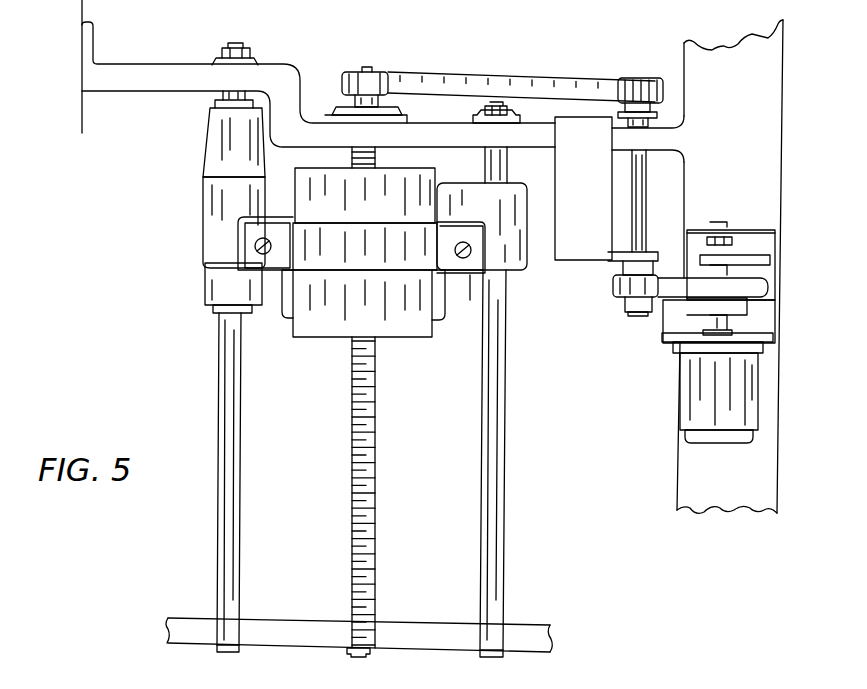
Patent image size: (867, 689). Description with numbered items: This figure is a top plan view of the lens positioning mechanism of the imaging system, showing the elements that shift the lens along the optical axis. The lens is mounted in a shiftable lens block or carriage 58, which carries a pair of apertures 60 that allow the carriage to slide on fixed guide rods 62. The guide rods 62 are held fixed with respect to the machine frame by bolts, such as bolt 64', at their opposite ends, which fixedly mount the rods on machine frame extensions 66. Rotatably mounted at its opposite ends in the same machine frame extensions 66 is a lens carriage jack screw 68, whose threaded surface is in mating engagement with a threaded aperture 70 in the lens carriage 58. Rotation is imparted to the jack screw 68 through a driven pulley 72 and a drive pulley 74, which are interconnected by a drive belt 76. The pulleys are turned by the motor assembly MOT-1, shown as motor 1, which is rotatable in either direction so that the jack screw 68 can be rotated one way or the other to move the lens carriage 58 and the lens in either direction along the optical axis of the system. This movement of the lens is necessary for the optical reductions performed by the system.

The lens carriage 58 is at (323, 330).
The apertures 60 is at (507, 270).
The guide rods 62 is at (230, 405).
The bolt 64' is at (265, 51).
The machine frame extensions 66 is at (158, 75).
The lens carriage jack screw 68 is at (365, 452).
The threaded aperture 70 is at (375, 340).
The driven pulley 72 is at (388, 73).
The drive pulley 74 is at (630, 77).
The drive belt 76 is at (458, 87).
The motor assembly MOT- 1 is at (698, 395).